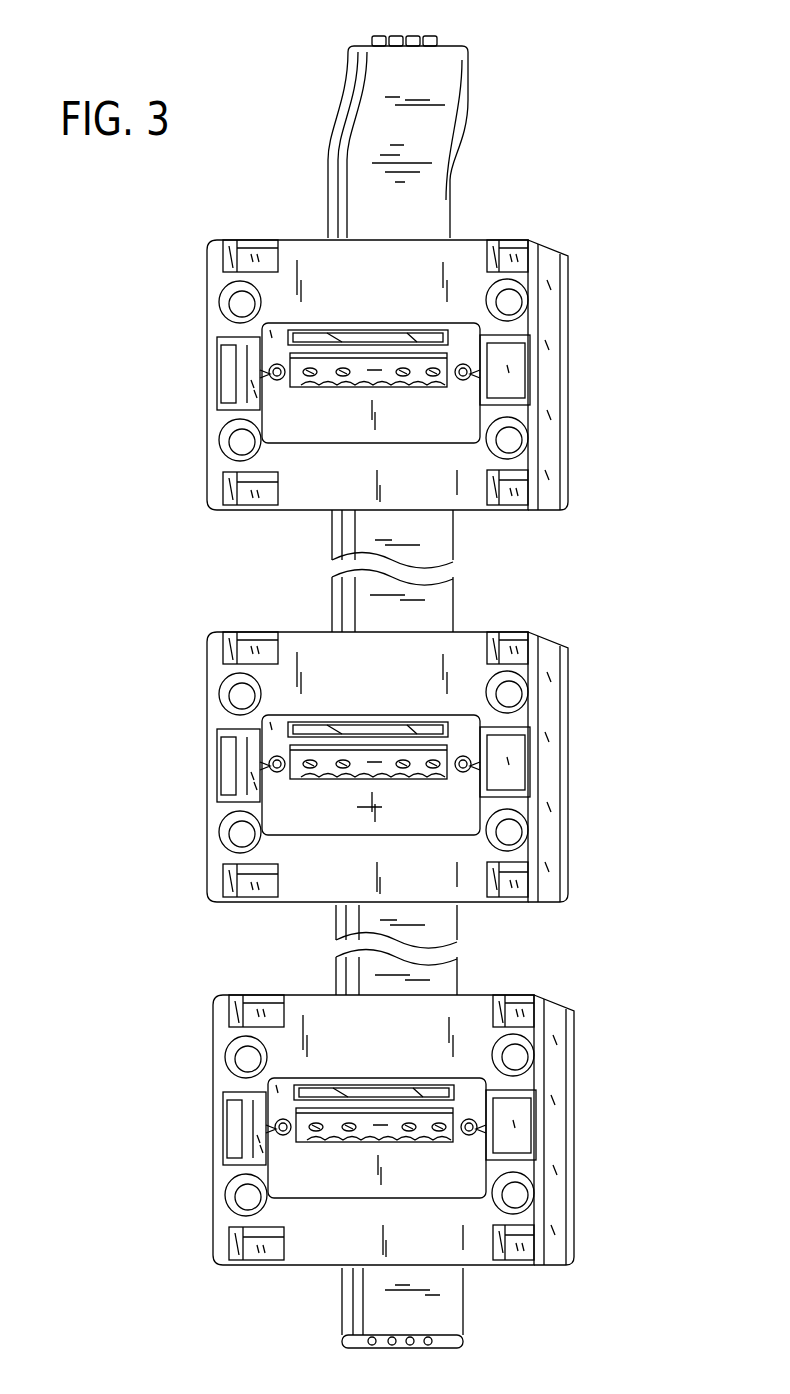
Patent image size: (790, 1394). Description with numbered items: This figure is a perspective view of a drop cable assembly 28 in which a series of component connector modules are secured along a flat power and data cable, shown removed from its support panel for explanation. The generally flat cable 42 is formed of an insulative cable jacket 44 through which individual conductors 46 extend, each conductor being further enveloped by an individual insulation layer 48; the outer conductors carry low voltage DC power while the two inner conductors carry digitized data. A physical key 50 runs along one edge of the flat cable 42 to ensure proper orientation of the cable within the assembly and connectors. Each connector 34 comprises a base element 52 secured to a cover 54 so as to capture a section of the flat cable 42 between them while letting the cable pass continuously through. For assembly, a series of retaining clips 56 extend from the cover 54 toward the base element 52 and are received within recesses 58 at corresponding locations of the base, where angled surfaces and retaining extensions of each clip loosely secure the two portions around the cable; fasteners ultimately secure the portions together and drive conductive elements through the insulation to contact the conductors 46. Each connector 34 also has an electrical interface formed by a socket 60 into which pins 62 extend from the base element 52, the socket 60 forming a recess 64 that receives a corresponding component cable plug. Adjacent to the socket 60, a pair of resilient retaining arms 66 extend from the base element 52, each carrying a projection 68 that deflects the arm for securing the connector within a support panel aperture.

The drop cable assembly 28 is at (424, 372).
The connector 34 is at (361, 220).
The flat cable 42 is at (432, 177).
The insulative cable jacket 44 is at (452, 1340).
The conductors 46 is at (414, 36).
The insulation layer 48 is at (400, 1347).
The physical key 50 is at (348, 88).
The base element 52 is at (584, 752).
The cover 54 is at (603, 759).
The retaining clips 56 is at (370, 372).
The recesses 58 is at (389, 376).
The socket 60 is at (371, 402).
The pins 62 is at (367, 401).
The recess 64 is at (368, 393).
The retaining arms 66 is at (397, 794).
The projection 68 is at (385, 765).